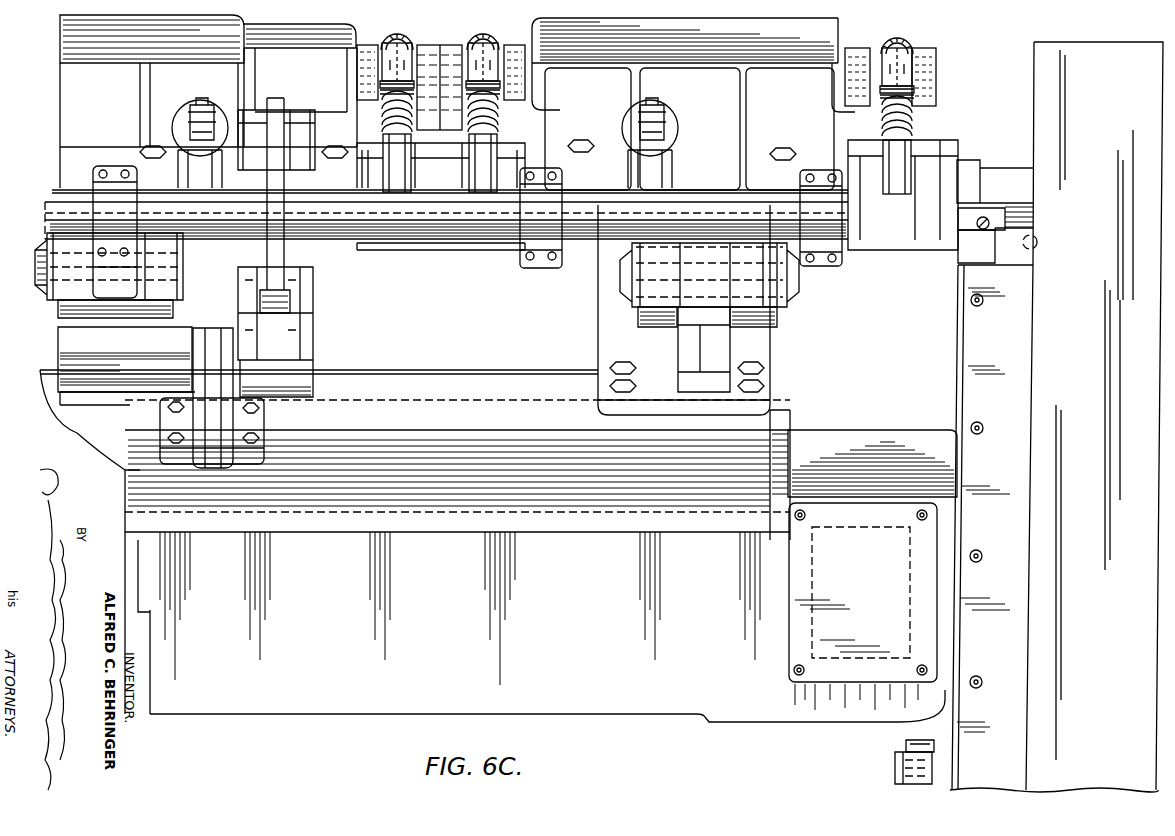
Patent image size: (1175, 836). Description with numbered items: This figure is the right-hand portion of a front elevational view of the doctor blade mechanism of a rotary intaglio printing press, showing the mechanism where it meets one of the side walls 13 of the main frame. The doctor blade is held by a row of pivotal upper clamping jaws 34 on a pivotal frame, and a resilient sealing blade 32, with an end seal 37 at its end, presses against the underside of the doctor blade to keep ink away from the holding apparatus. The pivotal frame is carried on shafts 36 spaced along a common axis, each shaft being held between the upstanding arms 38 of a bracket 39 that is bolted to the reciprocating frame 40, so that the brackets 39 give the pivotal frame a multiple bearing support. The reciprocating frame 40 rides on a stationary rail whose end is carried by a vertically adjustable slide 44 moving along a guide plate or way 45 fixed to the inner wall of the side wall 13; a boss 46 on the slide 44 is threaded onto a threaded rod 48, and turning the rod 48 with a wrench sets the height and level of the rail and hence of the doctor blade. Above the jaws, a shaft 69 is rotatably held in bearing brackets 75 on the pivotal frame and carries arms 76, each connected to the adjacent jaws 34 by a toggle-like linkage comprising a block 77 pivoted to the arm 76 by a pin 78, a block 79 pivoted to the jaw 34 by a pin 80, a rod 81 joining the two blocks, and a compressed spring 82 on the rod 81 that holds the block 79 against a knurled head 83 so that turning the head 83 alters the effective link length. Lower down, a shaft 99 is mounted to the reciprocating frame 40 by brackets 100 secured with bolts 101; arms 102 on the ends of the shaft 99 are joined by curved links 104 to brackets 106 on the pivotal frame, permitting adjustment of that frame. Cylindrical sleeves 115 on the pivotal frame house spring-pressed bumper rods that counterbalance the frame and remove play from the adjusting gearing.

The side walls 13 is at (1036, 52).
The sealing blade 32 is at (992, 204).
The upper clamping jaws 34 is at (62, 26).
The shafts 36 is at (46, 246).
The end seals 37 is at (1018, 212).
The upstanding arms 38 is at (70, 334).
The brackets 39 is at (80, 405).
The reciprocating frame 40 is at (362, 378).
The vertically adjustable slides 44 is at (1012, 746).
The guide plates or ways 45 is at (1020, 258).
The boss 46 is at (893, 766).
The threaded rod 48 is at (906, 744).
The shaft 69 is at (742, 204).
The brackets 75 is at (114, 186).
The arms 76 is at (452, 252).
The block 77 is at (478, 156).
The pin 78 is at (530, 152).
The block 79 is at (470, 62).
The pin 80 is at (936, 56).
The rod 81 is at (370, 118).
The compressed spring 82 is at (370, 99).
The knurled head 83 is at (398, 34).
The shaft 99 is at (150, 378).
The brackets 100 is at (218, 470).
The bolts 101 is at (262, 440).
The arms 102 is at (313, 320).
The curved links 104 is at (285, 254).
The brackets 106 is at (260, 110).
The cylindrical sleeves 115 is at (196, 116).